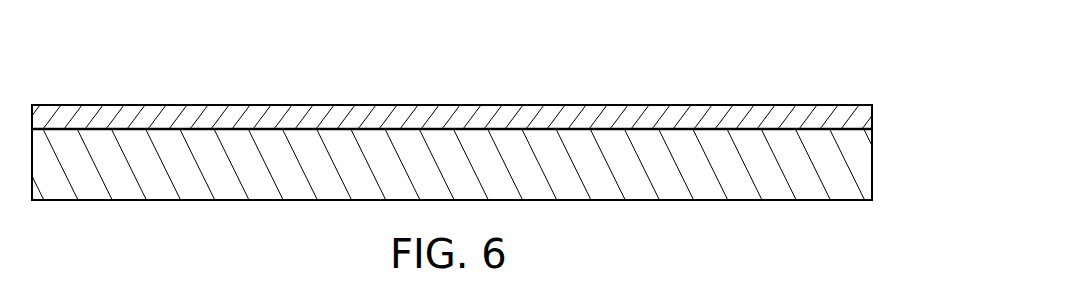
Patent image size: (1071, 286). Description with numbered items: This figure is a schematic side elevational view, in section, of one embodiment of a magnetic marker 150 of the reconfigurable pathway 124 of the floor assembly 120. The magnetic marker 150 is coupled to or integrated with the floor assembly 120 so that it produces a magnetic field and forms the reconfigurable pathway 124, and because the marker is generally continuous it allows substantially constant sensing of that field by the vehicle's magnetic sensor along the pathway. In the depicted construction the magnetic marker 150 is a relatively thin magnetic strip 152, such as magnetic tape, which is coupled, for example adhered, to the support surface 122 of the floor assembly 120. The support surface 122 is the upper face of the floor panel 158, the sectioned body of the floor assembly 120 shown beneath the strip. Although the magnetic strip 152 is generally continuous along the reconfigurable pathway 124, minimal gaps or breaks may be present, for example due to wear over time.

The floor assembly 120 is at (822, 85).
The support surface 122 is at (218, 128).
The reconfigurable pathway 124 is at (677, 77).
The magnetic marker 150 is at (582, 83).
The magnetic strip 152 is at (135, 105).
The floor panel 158 is at (872, 167).